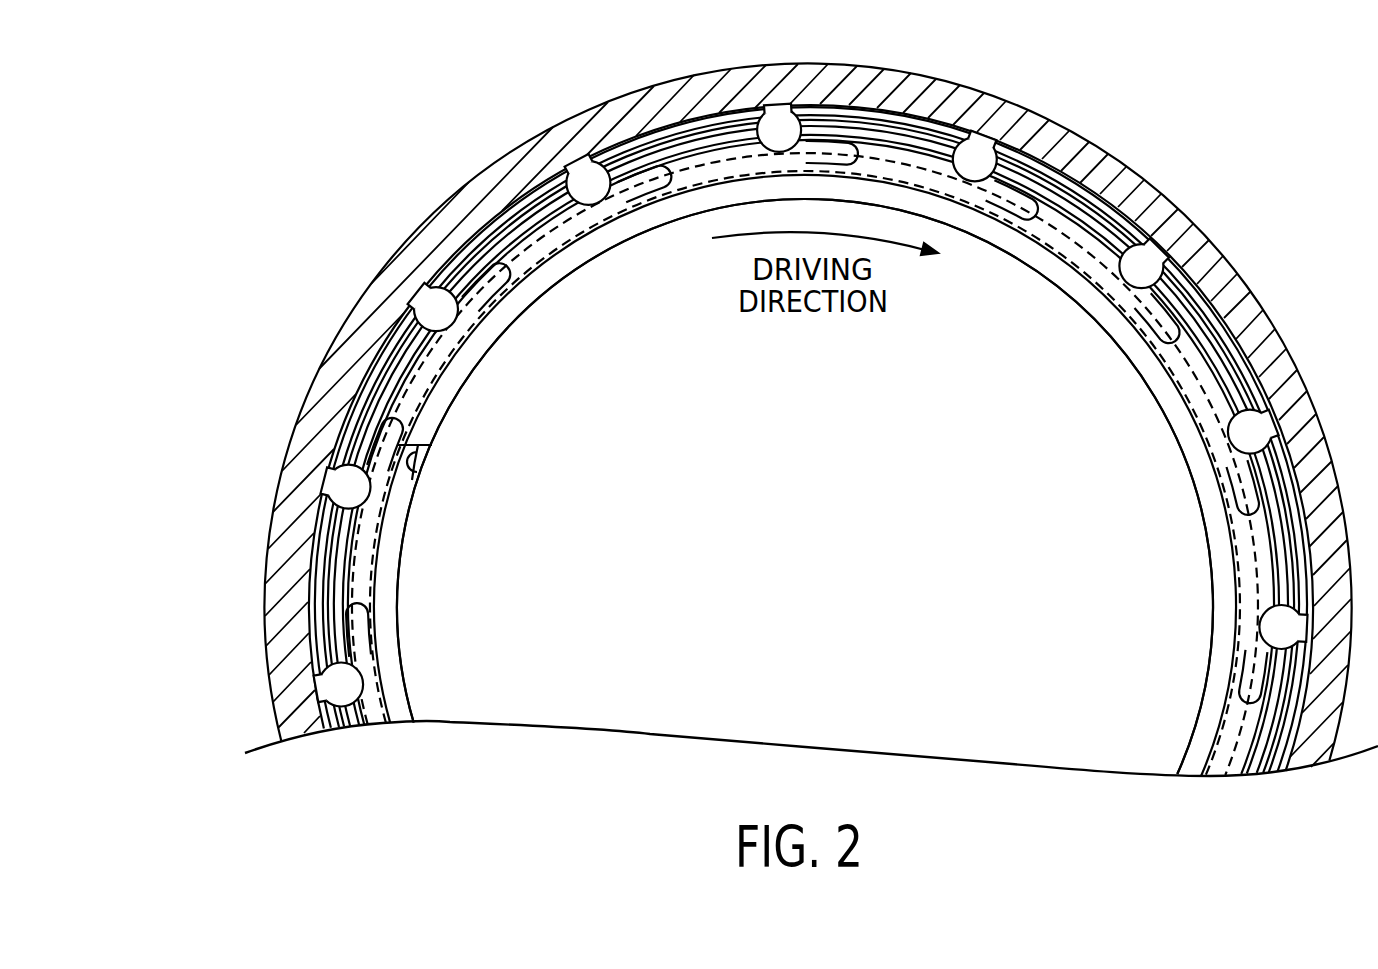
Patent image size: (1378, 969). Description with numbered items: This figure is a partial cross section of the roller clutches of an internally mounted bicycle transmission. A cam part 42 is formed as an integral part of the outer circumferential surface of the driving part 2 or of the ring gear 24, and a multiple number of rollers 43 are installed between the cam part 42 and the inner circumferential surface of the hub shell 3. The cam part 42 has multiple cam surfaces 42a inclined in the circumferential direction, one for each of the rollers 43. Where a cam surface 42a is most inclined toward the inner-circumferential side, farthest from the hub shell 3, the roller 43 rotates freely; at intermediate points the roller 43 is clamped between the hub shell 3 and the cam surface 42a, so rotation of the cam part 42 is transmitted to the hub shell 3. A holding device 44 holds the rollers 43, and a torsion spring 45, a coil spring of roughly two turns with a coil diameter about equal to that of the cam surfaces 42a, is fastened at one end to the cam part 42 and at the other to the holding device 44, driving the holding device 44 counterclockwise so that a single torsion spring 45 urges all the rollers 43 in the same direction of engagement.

The driving part 2 is at (562, 266).
The ring gear 24 is at (805, 486).
The hub shell 3 is at (469, 206).
The cam part 42 is at (712, 172).
The cam surfaces 42a is at (817, 153).
The rollers 43 is at (781, 106).
The holding device 44 is at (1207, 343).
The torsion spring 45 is at (1235, 564).